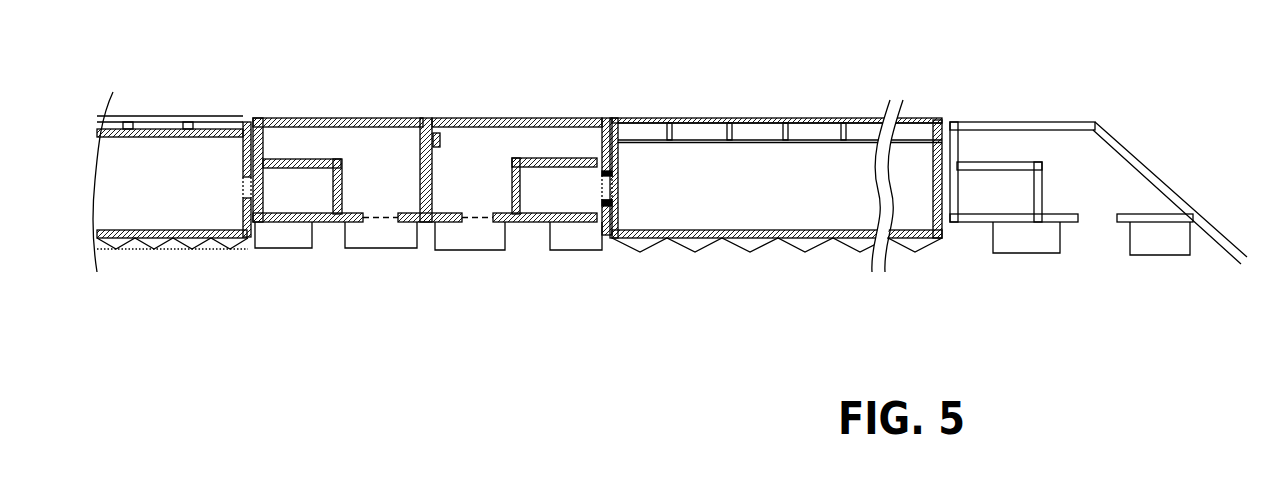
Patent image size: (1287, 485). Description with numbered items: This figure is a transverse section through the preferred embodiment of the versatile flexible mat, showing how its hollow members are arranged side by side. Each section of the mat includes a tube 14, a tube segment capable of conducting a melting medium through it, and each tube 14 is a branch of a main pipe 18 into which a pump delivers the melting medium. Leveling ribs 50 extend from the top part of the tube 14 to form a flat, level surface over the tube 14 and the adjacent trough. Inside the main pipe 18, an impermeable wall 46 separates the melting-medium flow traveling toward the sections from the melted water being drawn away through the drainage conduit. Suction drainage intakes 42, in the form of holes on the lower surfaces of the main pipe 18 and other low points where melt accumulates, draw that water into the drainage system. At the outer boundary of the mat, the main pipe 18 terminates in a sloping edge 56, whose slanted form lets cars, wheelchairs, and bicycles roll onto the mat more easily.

The tube 14 is at (776, 208).
The main pipe 18 is at (528, 97).
The suction drainage intake 42 is at (386, 220).
The impermeable wall 46 is at (300, 162).
The leveling rib 50 is at (763, 124).
The sloping edge 56 is at (1135, 160).